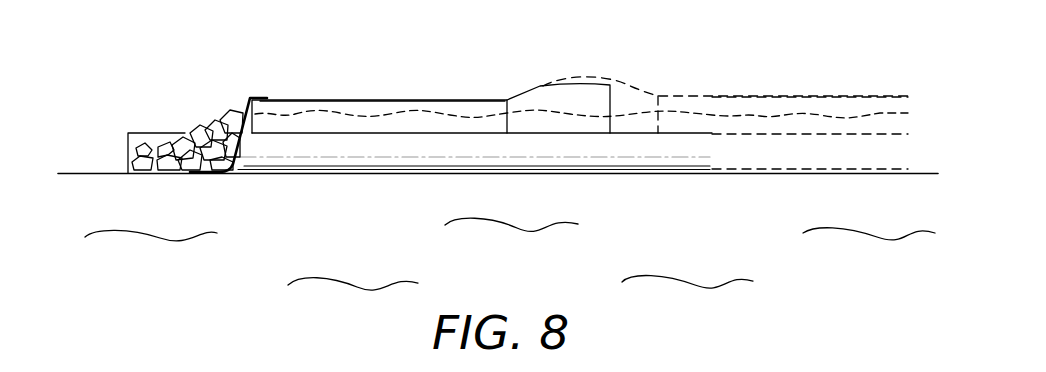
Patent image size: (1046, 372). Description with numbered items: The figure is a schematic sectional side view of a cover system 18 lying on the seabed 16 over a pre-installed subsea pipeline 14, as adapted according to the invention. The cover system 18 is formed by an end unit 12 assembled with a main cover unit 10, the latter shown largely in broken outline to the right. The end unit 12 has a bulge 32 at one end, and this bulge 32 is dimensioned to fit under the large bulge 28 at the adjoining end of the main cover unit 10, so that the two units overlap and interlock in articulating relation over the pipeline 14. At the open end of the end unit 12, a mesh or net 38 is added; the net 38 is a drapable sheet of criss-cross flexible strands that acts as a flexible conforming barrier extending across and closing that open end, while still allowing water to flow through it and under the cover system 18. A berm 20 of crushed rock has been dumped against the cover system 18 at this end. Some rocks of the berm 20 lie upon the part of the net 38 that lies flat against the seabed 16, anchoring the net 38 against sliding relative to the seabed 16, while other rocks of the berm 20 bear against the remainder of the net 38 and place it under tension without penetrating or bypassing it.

The main cover unit 10 is at (833, 97).
The end unit 12 is at (343, 100).
The subsea pipeline 14 is at (636, 157).
The seabed 16 is at (753, 242).
The cover system 18 is at (476, 62).
The berm 20 is at (208, 123).
The large bulge 28 is at (618, 82).
The bulge 32 is at (528, 95).
The net 38 is at (240, 145).